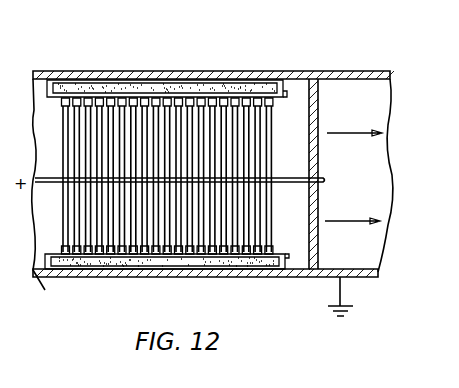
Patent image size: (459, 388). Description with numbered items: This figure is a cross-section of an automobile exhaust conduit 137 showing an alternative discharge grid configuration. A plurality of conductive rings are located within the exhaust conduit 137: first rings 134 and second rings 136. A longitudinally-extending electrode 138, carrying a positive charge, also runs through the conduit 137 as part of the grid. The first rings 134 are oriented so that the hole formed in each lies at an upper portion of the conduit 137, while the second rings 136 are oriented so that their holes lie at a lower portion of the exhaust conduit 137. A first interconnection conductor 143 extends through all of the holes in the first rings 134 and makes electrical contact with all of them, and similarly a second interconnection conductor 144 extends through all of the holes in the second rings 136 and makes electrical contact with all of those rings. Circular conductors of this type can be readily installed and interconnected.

The first rings 134 is at (93, 84).
The second rings 136 is at (110, 272).
The exhaust conduit 137 is at (368, 73).
The longitudinally-extending electrode 138 is at (323, 180).
The first interconnection conductor 143 is at (279, 91).
The second interconnection conductor 144 is at (283, 258).